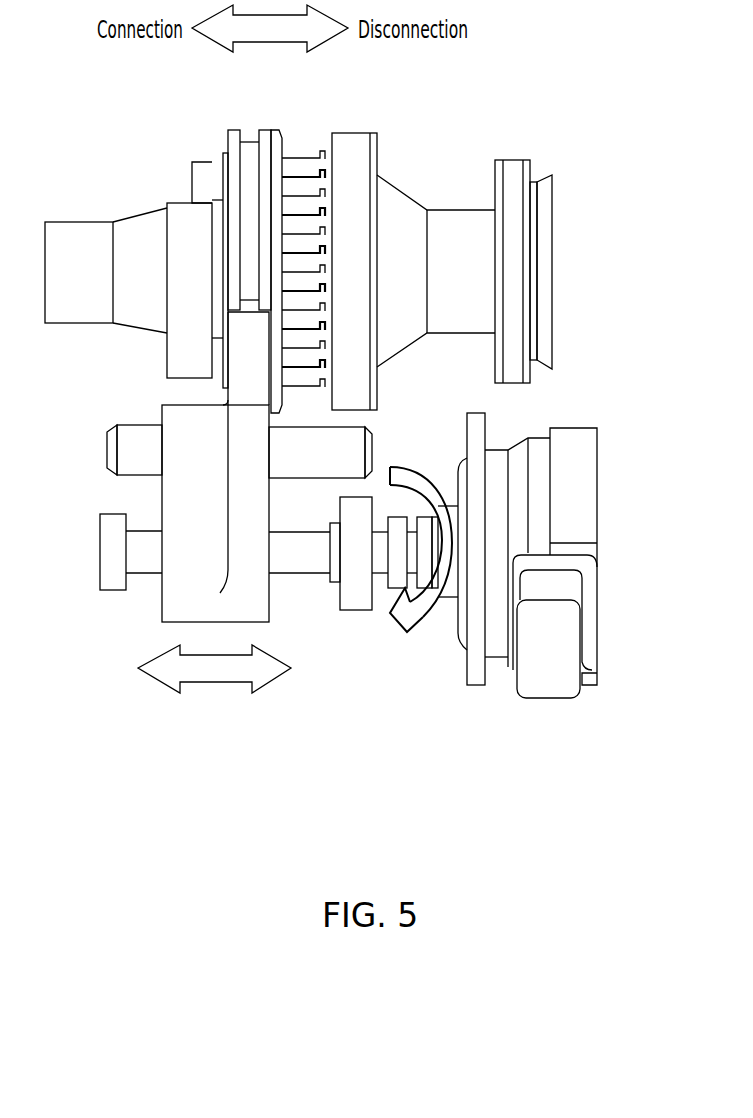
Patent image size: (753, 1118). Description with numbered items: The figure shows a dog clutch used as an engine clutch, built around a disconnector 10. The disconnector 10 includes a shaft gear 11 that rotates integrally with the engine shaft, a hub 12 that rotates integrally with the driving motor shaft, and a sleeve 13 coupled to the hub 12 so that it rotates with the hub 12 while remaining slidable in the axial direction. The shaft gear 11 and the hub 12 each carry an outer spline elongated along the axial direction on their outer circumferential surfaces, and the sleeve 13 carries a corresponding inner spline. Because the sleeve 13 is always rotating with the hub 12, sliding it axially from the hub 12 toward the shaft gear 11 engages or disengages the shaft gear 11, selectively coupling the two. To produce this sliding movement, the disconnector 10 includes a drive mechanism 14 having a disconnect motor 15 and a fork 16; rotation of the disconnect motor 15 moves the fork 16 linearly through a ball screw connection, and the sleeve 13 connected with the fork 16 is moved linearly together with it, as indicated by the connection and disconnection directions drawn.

The disconnector 10 is at (426, 156).
The shaft gear 11 is at (221, 162).
The hub 12 is at (310, 152).
The sleeve 13 is at (258, 162).
The drive mechanism 14 is at (388, 650).
The disconnect motor 15 is at (582, 478).
The fork 16 is at (180, 494).